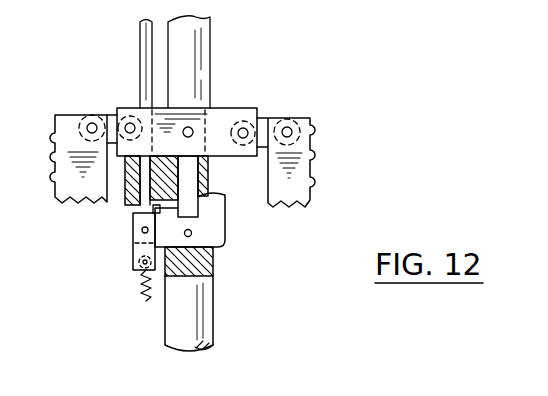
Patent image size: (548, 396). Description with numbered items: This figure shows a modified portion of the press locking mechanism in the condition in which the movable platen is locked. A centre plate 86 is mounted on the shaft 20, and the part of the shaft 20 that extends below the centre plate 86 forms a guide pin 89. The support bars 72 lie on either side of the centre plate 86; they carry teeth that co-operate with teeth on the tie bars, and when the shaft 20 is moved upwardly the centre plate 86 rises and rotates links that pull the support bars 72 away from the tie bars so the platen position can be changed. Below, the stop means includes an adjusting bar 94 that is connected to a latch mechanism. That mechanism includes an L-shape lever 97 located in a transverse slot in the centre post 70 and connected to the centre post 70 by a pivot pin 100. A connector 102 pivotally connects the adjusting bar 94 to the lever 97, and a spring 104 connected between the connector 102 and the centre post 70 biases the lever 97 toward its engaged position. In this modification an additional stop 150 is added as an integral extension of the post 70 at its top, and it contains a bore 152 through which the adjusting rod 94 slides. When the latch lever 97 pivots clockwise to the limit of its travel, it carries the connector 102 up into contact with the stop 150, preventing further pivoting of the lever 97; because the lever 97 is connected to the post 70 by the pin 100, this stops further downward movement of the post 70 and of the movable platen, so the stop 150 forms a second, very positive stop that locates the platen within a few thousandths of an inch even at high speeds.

The shaft 20 is at (200, 43).
The centre post 70 is at (202, 318).
The support bars 72 is at (77, 117).
The centre plate 86 is at (222, 108).
The guide pin 89 is at (188, 202).
The adjusting bar 94 is at (140, 43).
The L-shape lever 97 is at (222, 222).
The pivot pin 100 is at (192, 233).
The connector 102 is at (131, 250).
The spring 104 is at (133, 292).
The stop 150 is at (124, 198).
The bore 152 is at (133, 213).